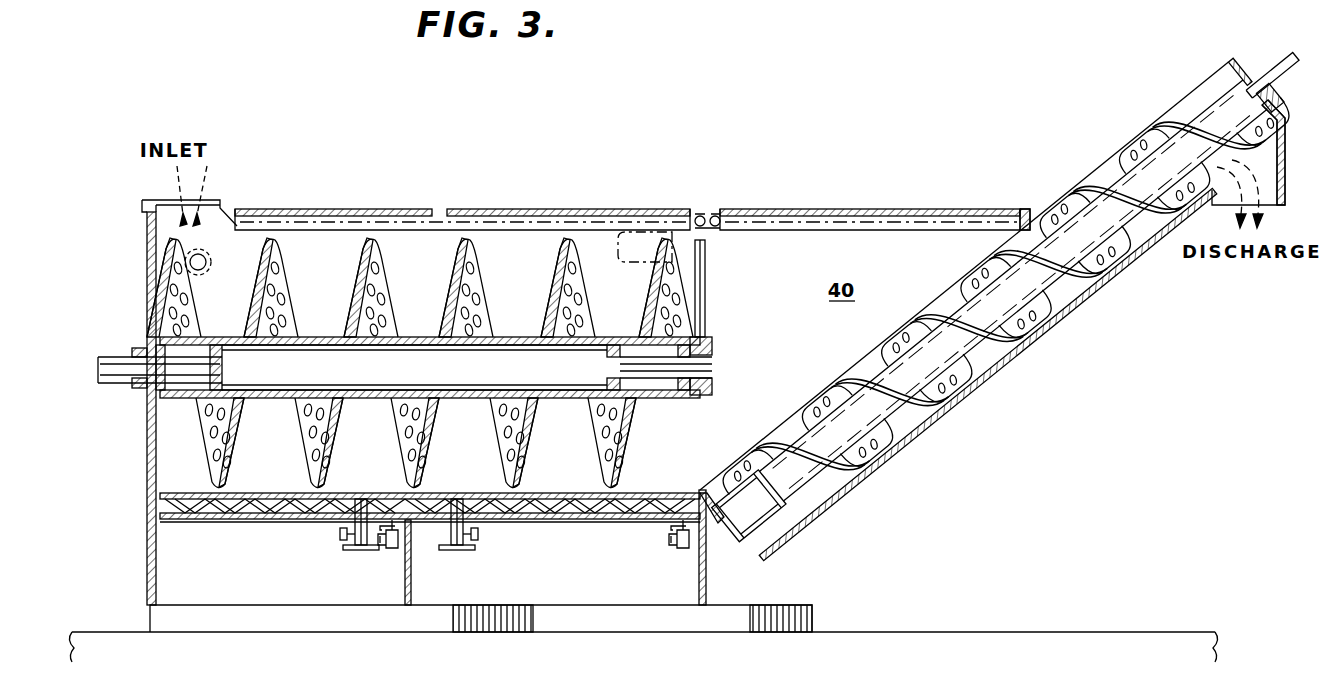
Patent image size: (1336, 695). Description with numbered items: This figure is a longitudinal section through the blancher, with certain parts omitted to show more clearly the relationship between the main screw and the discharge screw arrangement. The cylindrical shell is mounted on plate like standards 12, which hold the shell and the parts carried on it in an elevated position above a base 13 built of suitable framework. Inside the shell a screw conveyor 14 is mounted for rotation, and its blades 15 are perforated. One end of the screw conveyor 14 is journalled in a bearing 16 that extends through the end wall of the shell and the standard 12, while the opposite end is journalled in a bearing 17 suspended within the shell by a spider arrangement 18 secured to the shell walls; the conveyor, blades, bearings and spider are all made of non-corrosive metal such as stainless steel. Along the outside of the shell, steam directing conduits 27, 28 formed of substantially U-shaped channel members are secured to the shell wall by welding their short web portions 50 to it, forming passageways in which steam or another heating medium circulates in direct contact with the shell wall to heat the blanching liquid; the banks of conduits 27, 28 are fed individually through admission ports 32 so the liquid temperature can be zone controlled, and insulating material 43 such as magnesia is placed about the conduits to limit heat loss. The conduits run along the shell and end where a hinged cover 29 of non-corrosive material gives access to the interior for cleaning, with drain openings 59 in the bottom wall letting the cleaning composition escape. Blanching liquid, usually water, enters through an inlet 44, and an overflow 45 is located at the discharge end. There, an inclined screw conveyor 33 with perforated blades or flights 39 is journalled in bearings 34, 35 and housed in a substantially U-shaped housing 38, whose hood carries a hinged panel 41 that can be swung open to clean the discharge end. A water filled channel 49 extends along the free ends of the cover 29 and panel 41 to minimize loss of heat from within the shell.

The plate like standards 12 is at (156, 268).
The base 13 is at (810, 603).
The screw conveyor 14 is at (503, 291).
The blades 15 is at (452, 285).
The bearing 16 is at (150, 350).
The bearing 17 is at (712, 349).
The spider arrangement 18 is at (706, 298).
The steam directing conduit 27 is at (305, 510).
The steam directing conduit 28 is at (590, 510).
The hinged cover 29 is at (500, 209).
The admission ports 32 is at (390, 549).
The inclined screw conveyor 33 is at (990, 318).
The bearing 34 is at (732, 545).
The bearing 35 is at (1280, 100).
The U-shaped housing 38 is at (957, 394).
The perforated blades or flights 39 is at (1125, 186).
The panel 41 is at (878, 209).
The insulating material 43 is at (192, 512).
The inlet 44 is at (201, 262).
The overflow 45 is at (603, 232).
The water filled channel 49 is at (718, 212).
The web portions 50 is at (178, 502).
The drain openings 59 is at (352, 550).